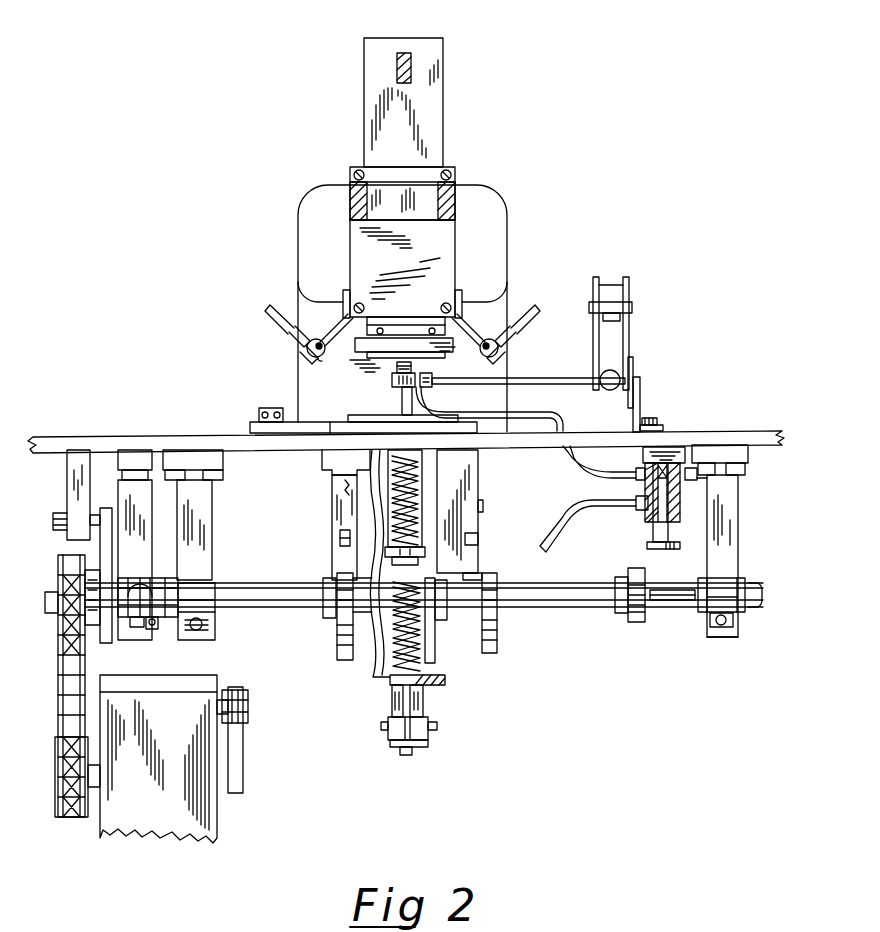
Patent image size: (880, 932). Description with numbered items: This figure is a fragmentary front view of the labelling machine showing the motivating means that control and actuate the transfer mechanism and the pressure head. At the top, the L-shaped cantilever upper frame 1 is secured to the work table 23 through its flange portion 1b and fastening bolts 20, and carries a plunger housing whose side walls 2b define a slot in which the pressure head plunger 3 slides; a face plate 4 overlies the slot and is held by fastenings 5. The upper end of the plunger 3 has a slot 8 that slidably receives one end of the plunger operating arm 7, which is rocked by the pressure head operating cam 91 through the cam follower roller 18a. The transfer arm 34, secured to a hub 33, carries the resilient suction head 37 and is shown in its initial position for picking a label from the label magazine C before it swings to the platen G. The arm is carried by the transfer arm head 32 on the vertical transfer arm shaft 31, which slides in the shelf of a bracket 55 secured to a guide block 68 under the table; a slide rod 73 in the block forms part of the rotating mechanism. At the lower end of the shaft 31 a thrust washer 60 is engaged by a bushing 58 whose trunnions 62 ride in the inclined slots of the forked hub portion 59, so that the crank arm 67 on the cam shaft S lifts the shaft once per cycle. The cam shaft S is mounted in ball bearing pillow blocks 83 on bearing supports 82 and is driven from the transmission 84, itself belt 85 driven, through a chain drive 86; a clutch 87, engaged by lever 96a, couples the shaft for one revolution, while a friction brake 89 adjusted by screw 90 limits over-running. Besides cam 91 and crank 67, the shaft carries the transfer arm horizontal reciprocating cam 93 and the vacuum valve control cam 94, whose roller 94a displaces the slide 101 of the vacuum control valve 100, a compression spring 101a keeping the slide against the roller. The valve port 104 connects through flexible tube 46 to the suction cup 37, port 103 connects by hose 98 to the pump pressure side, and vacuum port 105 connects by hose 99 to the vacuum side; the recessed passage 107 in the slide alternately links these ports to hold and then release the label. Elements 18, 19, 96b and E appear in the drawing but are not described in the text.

The upper frame 1 is at (507, 252).
The flange portion 1b is at (252, 424).
The side walls 2b is at (365, 178).
The pressure head plunger 3 is at (443, 127).
The face plate 4 is at (445, 224).
The fastenings 5 is at (452, 172).
The plunger operating arm 7 is at (405, 55).
The slot 8 is at (412, 70).
The support bar 18 is at (338, 490).
The cam follower roller 18a is at (340, 535).
The bracket 19 is at (322, 455).
The fastening bolts 20 is at (277, 408).
The work table 23 is at (705, 432).
The transfer arm shaft 31 is at (402, 405).
The transfer arm head 32 is at (392, 380).
The hub 33 is at (430, 374).
The transfer arm 34 is at (518, 378).
The suction head 37 is at (605, 370).
The flexible tube 46 is at (560, 413).
The bracket 55 is at (374, 682).
The bushing 58 is at (388, 733).
The forked hub portion 59 is at (423, 718).
The thrust washer 60 is at (428, 744).
The trunnions 62 is at (437, 726).
The crank arm 67 is at (436, 637).
The guide block 68 is at (480, 466).
The slide rod 73 is at (479, 540).
The bearing supports 82 is at (212, 542).
The ball bearing pillow blocks 83 is at (215, 636).
The transmission 84 is at (165, 820).
The belt 85 is at (243, 760).
The chain drive 86 is at (60, 664).
The clutch 87 is at (88, 560).
The friction brake 89 is at (152, 630).
The screw 90 is at (136, 628).
The pressure head operating cam 91 is at (342, 565).
The transfer arm horizontal reciprocating cam 93 is at (492, 653).
The vacuum valve control cam 94 is at (636, 624).
The roller 94a is at (672, 595).
The lever 96a is at (105, 508).
The block 96b is at (70, 500).
The hose 98 is at (586, 537).
The hose 99 is at (698, 482).
The vacuum control valve 100 is at (654, 528).
The slide 101 is at (650, 545).
The compression spring 101a is at (650, 470).
The port 103 is at (640, 511).
The port 104 is at (640, 468).
The vacuum port 105 is at (684, 478).
The passage 107 is at (638, 493).
The label magazine C is at (636, 332).
The handle assembly E is at (288, 347).
The platen G is at (362, 410).
The cam shaft S is at (578, 608).